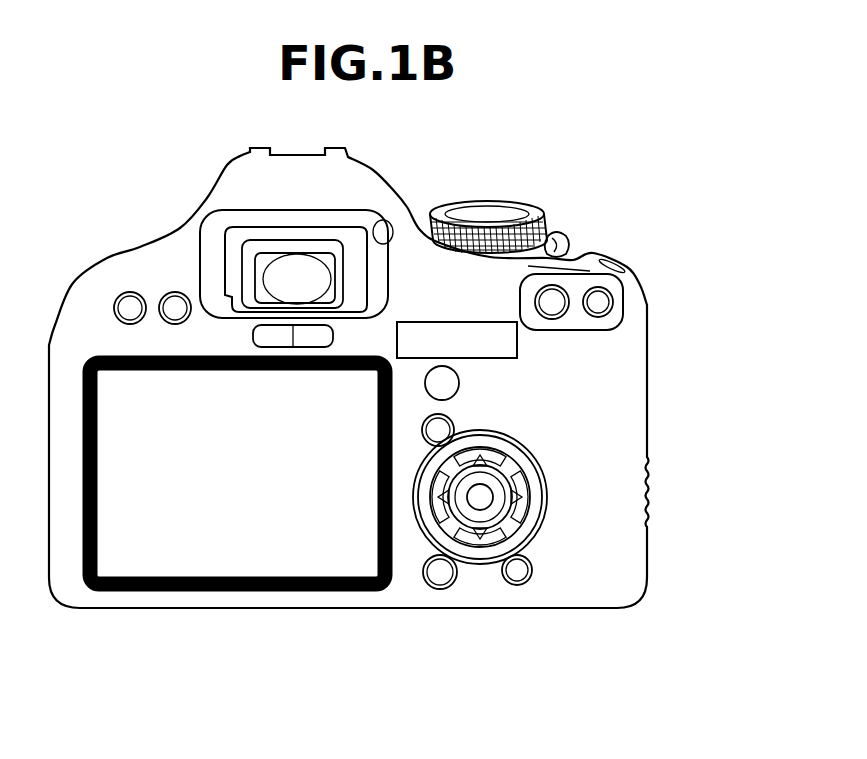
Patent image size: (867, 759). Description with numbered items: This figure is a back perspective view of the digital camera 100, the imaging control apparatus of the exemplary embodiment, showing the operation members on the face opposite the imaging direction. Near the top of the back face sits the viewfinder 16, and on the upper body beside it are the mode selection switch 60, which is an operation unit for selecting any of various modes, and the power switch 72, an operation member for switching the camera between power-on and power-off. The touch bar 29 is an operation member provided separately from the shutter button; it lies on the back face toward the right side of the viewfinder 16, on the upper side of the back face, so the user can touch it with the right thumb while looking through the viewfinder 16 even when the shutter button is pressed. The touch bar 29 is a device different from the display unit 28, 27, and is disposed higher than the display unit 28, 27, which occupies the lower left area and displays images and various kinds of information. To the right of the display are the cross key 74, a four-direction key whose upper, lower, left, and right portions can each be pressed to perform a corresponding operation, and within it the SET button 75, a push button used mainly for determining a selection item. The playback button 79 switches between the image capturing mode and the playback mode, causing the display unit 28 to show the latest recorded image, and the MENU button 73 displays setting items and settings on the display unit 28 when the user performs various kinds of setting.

The digital camera 100 is at (228, 180).
The viewfinder 16 is at (283, 283).
The MENU button 73 is at (128, 298).
The mode selection switch 60 is at (497, 210).
The power switch 72 is at (558, 237).
The touch bar 29 is at (517, 352).
The display unit 28 is at (237, 517).
The display unit 27 is at (177, 560).
The playback button 79 is at (516, 572).
The cross key 74 is at (566, 486).
The SET button 75 is at (487, 497).